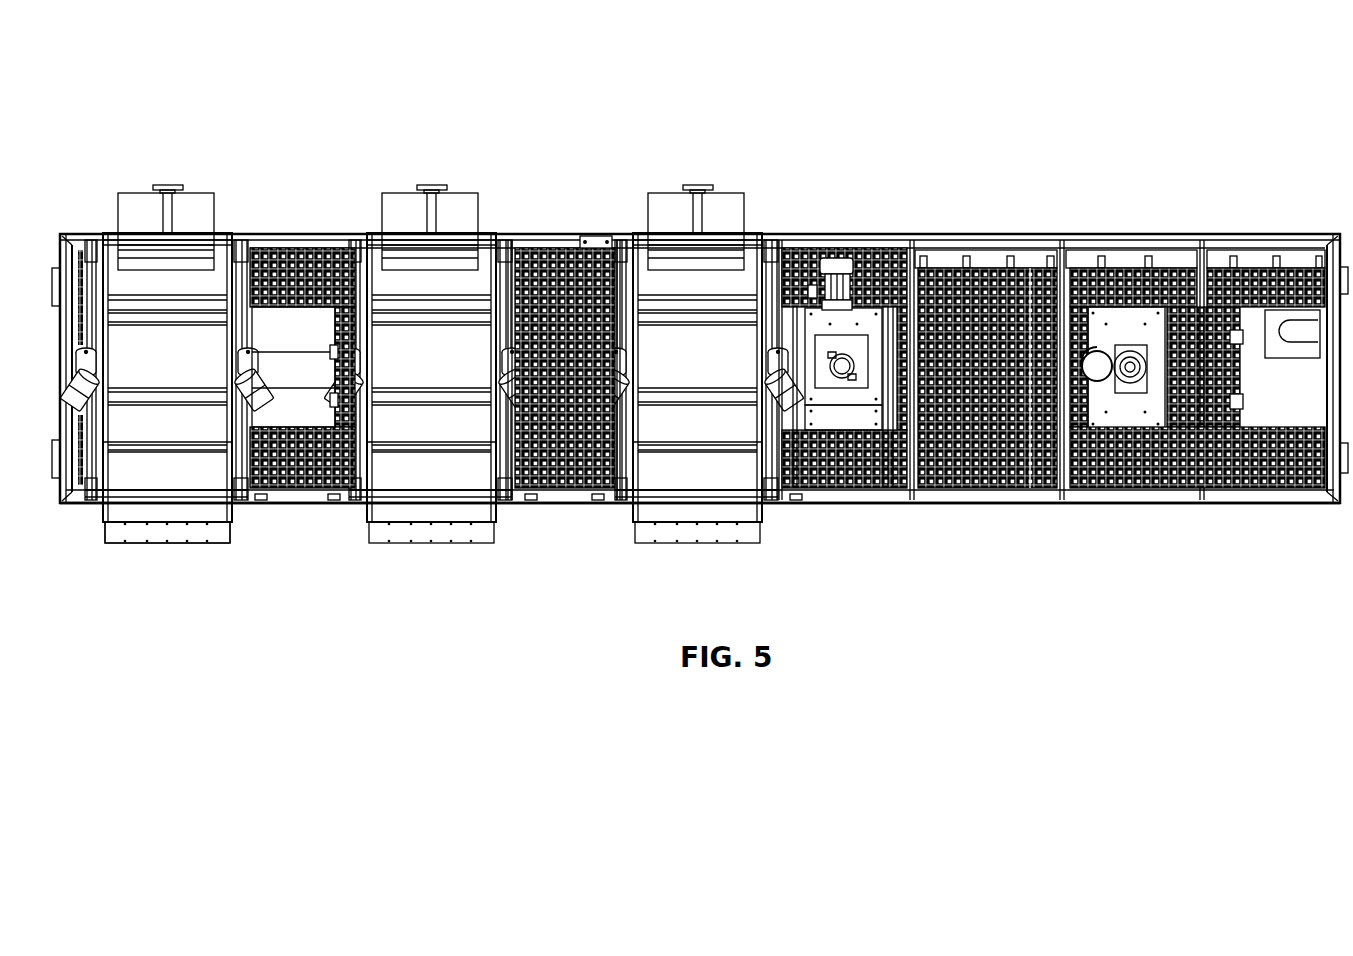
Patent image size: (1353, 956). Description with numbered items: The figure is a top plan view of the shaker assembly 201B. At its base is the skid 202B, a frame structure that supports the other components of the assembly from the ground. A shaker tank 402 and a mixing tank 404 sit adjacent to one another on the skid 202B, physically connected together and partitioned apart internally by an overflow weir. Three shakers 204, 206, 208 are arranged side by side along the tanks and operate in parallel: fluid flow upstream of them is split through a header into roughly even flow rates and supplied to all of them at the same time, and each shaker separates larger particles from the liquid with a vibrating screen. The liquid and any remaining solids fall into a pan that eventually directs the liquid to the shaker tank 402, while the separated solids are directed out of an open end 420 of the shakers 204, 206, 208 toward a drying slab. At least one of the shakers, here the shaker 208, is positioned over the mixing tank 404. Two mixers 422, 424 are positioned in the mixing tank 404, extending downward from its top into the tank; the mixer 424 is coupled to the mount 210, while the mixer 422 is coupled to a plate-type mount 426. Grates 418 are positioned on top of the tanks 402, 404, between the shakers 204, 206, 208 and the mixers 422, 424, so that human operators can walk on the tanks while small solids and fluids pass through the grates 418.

The shaker assembly 201B is at (199, 108).
The skid 202B is at (1261, 233).
The shaker 204 is at (222, 234).
The shaker 206 is at (485, 234).
The shaker 208 is at (750, 234).
The mount 210 is at (1147, 327).
The grates 418 is at (1232, 337).
The open end 420 is at (135, 533).
The mixer 422 is at (870, 345).
The mixer 424 is at (1095, 360).
The mount 426 is at (840, 364).
The shaker tank 402 is at (550, 518).
The mixing tank 404 is at (942, 518).